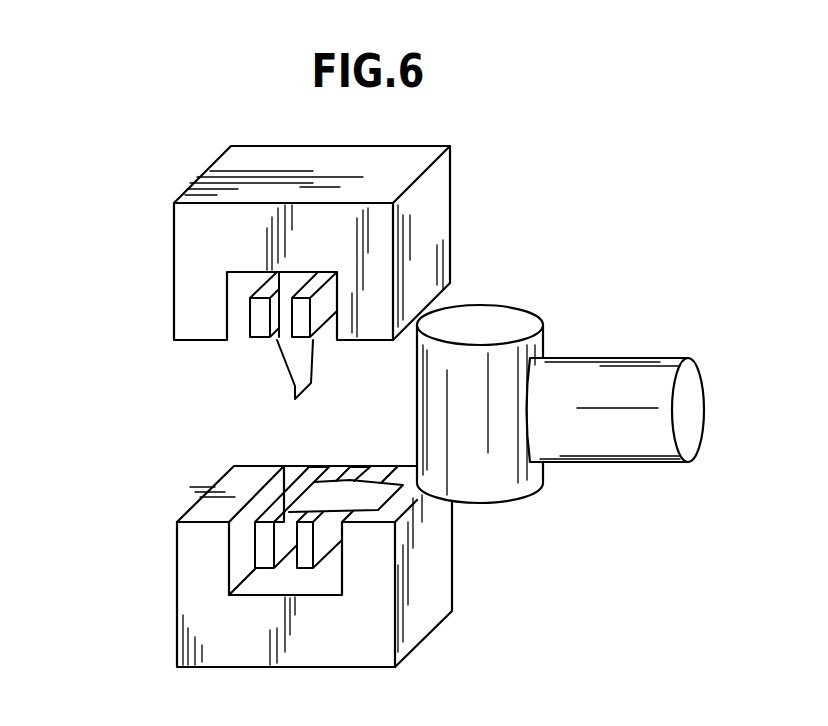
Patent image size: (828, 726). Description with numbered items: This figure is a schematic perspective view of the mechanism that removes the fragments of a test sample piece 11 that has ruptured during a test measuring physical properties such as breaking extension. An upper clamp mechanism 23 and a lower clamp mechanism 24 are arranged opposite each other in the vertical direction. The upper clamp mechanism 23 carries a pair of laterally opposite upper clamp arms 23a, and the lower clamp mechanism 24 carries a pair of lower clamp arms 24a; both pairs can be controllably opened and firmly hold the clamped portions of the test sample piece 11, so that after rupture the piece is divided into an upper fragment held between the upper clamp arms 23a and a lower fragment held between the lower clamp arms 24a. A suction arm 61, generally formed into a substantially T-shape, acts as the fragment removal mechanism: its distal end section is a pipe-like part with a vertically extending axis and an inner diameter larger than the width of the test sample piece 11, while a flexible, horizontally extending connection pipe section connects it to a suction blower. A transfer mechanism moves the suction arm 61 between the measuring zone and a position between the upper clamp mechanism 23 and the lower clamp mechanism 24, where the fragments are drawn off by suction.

The upper clamp mechanism 23 is at (187, 232).
The upper clamp arms 23a is at (300, 326).
The test sample piece 11 is at (322, 490).
The lower clamp mechanism 24 is at (185, 593).
The lower clamp arms 24a is at (303, 562).
The suction arm 61 is at (583, 378).